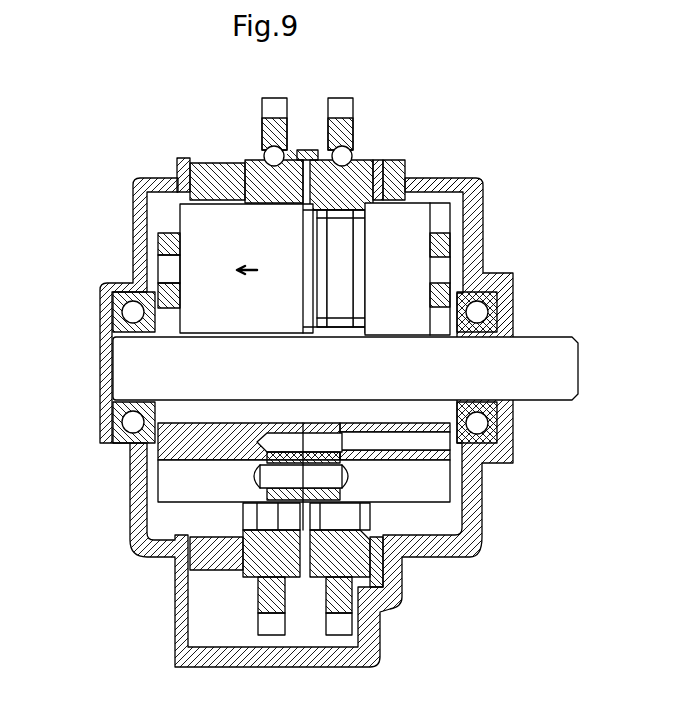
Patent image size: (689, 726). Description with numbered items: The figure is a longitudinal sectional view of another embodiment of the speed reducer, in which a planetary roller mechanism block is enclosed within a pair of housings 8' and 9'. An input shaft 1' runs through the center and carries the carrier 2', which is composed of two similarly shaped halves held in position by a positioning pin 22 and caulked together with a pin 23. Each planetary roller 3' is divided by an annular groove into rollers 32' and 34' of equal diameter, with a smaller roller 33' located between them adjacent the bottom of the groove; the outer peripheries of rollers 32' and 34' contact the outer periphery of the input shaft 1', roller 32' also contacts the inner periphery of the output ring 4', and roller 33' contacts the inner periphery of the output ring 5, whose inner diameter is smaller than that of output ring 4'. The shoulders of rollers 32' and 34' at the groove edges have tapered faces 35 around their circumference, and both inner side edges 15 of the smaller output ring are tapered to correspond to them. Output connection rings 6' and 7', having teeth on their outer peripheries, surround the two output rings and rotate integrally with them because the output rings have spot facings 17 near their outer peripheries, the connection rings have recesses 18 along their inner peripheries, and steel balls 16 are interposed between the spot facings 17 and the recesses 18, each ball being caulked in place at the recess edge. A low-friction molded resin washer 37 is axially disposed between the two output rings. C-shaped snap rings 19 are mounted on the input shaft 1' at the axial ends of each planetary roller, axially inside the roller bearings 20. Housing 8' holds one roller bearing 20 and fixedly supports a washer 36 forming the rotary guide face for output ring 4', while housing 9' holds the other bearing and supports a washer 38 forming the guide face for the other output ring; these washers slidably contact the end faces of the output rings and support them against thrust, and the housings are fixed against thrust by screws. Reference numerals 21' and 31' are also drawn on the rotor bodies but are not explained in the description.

The input shaft 1' is at (357, 357).
The carrier 2' is at (441, 257).
The planetary roller 3' is at (451, 168).
The output ring 4' is at (258, 175).
The output ring 5 is at (378, 168).
The output connection ring 6' is at (274, 102).
The output connection ring 7' is at (354, 98).
The housing 8' is at (305, 405).
The housing 9' is at (527, 288).
The inner side edges 15 is at (247, 203).
The steel balls 16 is at (271, 150).
The spot facings 17 is at (310, 197).
The recesses 18 is at (287, 118).
The C-shaped snap rings 19 is at (120, 442).
The roller bearings 20 is at (122, 424).
The magnet segments 21' is at (125, 261).
The positioning pin 22 is at (323, 444).
The pin 23 is at (313, 478).
The pole pieces 31' is at (302, 265).
The roller 32' is at (190, 260).
The roller 33' is at (429, 159).
The roller 34' is at (485, 259).
The tapered faces 35 is at (103, 296).
The washer 36 is at (208, 187).
The washer 37 is at (305, 150).
The washer 38 is at (340, 262).